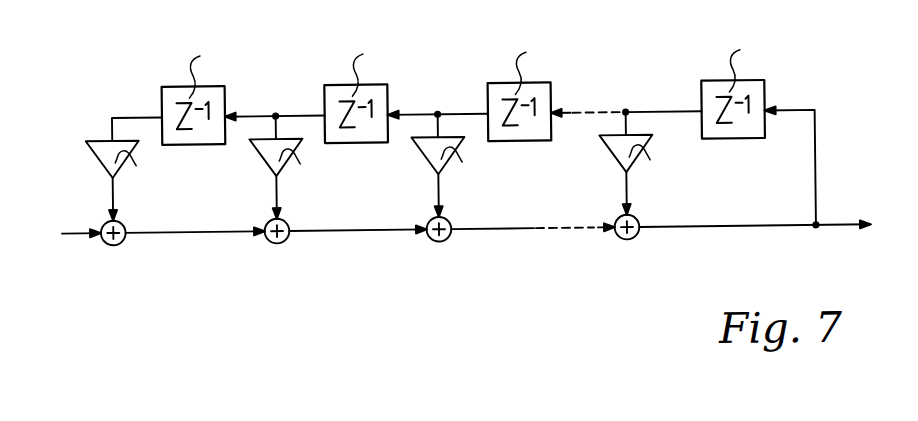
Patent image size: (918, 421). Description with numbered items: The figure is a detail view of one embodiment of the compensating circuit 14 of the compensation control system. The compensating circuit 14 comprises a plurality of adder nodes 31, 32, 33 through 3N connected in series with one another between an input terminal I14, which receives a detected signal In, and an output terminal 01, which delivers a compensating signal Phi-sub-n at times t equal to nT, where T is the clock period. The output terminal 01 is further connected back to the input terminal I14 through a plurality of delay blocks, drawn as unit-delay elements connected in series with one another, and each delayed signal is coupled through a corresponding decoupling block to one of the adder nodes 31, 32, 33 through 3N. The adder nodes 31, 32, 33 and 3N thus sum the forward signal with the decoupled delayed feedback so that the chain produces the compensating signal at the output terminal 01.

The compensating circuit 14 is at (461, 218).
The adder node 31 is at (123, 238).
The adder node 32 is at (287, 238).
The adder node 33 is at (449, 238).
The adder node 3N is at (637, 238).
The input terminal I14 is at (62, 234).
The output terminal 01 is at (872, 235).